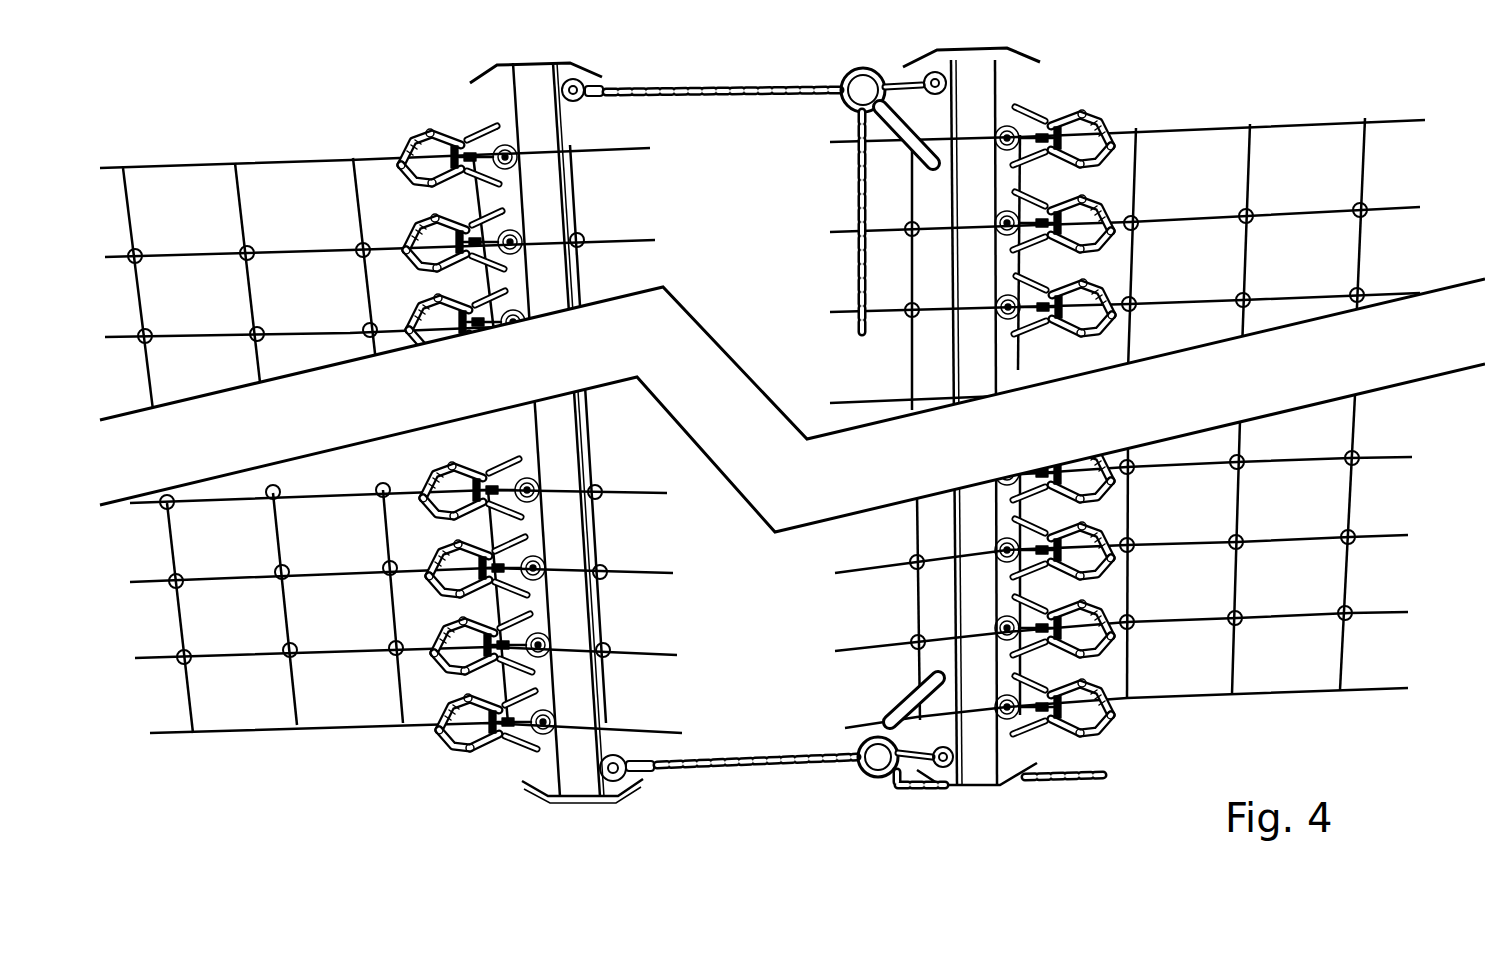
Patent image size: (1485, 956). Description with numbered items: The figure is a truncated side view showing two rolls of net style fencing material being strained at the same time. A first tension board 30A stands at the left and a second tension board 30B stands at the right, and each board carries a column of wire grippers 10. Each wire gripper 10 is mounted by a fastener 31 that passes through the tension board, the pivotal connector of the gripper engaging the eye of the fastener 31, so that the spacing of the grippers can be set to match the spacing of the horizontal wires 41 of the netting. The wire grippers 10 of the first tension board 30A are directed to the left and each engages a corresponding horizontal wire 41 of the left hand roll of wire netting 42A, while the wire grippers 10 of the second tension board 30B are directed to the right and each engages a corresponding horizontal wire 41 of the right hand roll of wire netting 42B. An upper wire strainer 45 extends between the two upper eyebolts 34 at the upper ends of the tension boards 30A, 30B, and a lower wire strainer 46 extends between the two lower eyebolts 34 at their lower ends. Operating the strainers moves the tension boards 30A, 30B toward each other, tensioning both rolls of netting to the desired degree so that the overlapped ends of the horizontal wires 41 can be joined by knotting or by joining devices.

The wire gripper 10 is at (411, 126).
The first tension board 30A is at (580, 703).
The second tension board 30B is at (967, 600).
The fastener 31 is at (548, 753).
The eyebolt 34 is at (575, 108).
The horizontal wire 41 is at (190, 166).
The left hand roll of wire netting 42A is at (375, 748).
The right hand roll of wire netting 42B is at (1188, 683).
The upper wire strainer 45 is at (723, 85).
The lower wire strainer 46 is at (770, 757).